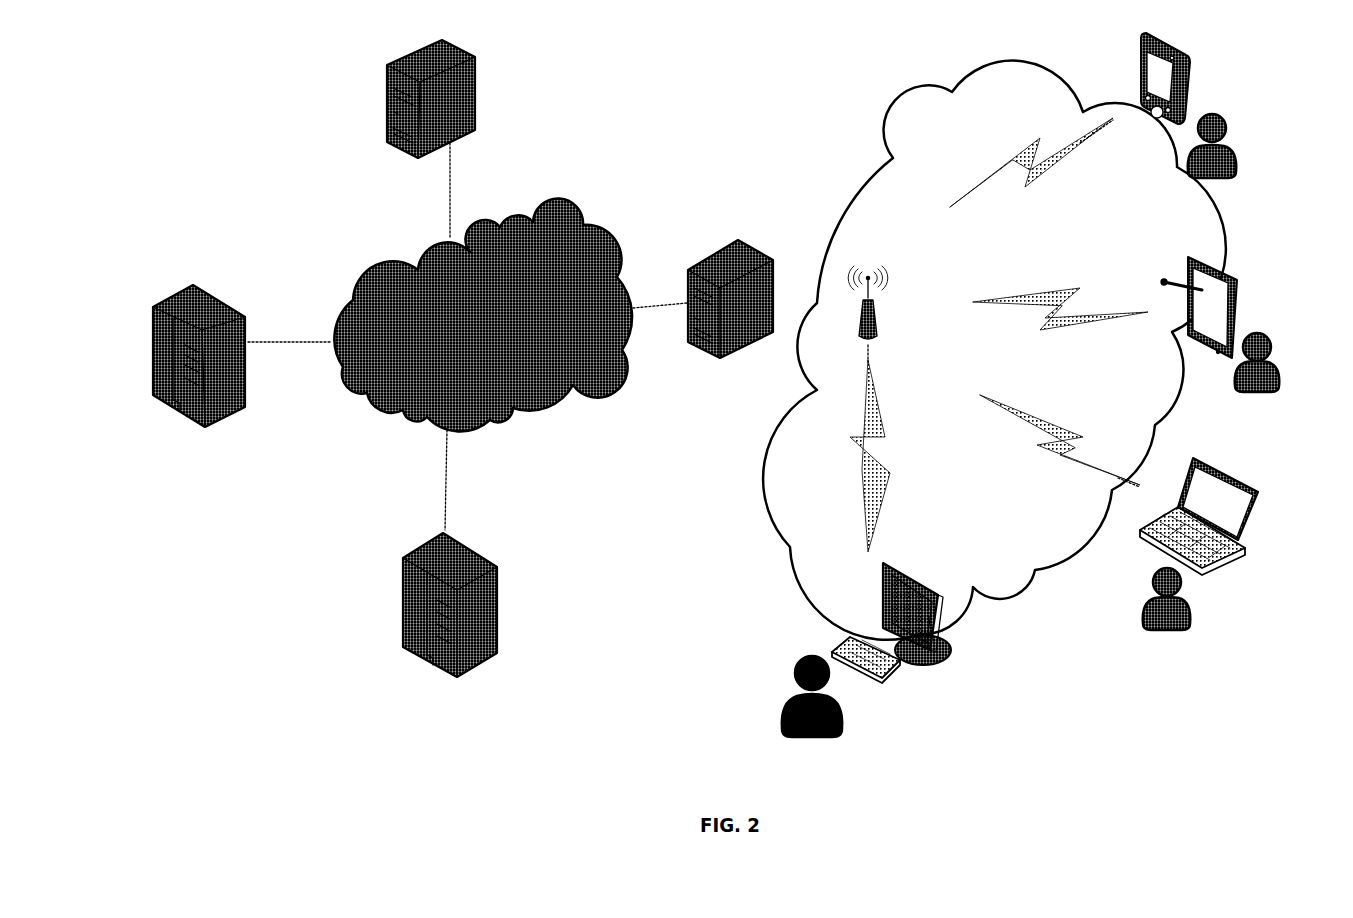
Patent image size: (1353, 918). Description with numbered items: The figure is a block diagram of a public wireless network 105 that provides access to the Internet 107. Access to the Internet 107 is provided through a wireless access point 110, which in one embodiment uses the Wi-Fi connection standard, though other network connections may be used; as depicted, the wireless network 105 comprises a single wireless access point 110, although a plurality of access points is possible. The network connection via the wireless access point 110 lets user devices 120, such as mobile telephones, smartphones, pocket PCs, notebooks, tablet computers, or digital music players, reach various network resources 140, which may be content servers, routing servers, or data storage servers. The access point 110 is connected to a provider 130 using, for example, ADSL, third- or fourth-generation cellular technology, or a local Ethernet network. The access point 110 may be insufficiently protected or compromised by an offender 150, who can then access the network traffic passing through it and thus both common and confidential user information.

The public wireless network 105 is at (894, 104).
The Internet 107 is at (370, 297).
The wireless access point 110 is at (877, 291).
The user devices 120 is at (1214, 331).
The provider 130 is at (703, 281).
The network resources 140 is at (333, 358).
The offender 150 is at (866, 650).